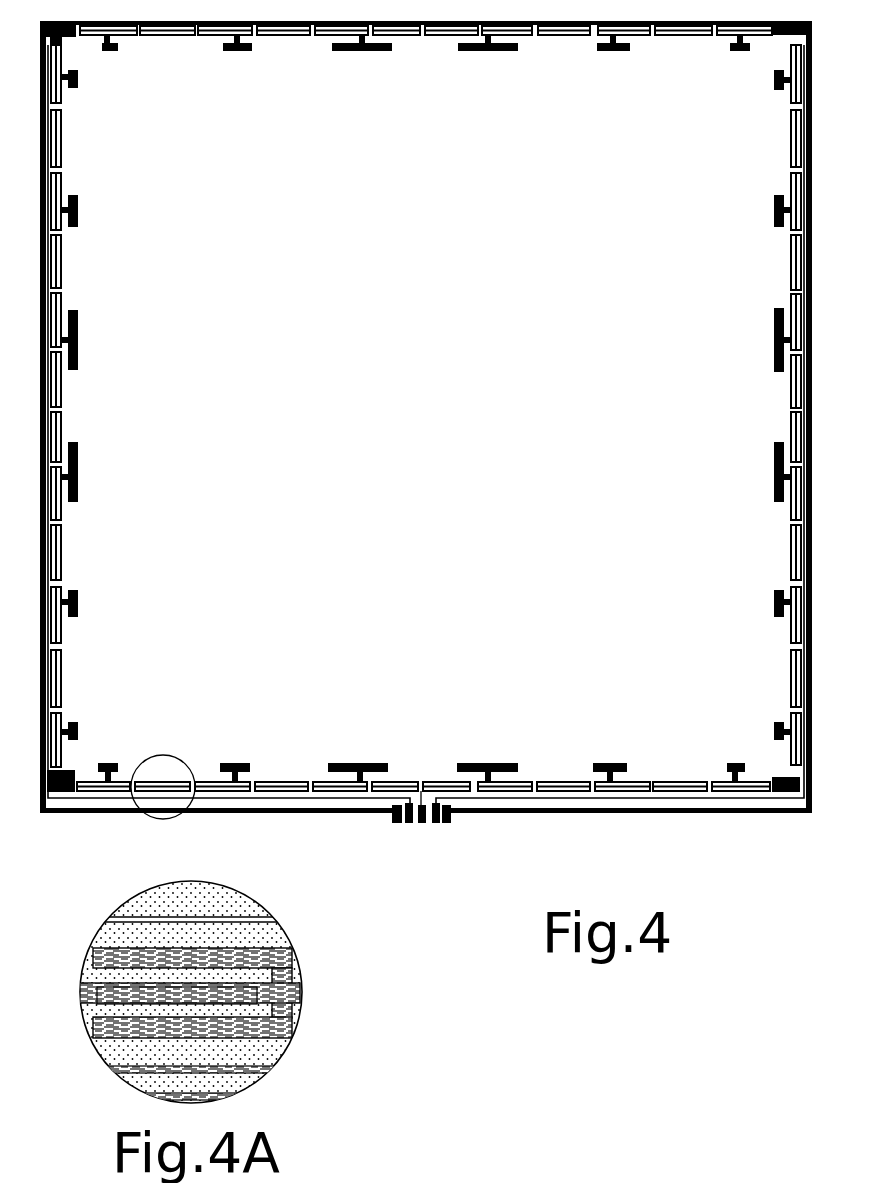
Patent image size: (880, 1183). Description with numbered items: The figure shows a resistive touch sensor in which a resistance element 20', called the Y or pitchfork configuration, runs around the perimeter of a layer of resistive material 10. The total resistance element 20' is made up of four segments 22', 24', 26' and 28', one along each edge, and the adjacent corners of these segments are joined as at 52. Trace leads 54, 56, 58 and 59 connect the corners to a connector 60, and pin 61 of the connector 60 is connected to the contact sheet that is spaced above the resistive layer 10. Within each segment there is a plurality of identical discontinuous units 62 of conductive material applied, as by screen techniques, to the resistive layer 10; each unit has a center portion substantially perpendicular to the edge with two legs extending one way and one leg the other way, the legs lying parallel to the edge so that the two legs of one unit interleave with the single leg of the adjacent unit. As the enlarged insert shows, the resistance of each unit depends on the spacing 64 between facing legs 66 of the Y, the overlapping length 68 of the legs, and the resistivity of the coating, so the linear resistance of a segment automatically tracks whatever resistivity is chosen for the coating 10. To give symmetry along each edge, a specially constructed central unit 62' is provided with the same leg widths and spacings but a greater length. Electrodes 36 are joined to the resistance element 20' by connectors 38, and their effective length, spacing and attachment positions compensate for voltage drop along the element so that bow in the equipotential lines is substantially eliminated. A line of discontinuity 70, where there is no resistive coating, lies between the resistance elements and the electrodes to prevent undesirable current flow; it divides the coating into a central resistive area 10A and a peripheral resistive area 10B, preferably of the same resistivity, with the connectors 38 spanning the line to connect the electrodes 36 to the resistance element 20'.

In FIG. 4, the resistive layer 10 is at (421, 427).
In FIG. 4A, the central resistive area 10A is at (163, 898).
In FIG. 4A, the peripheral resistive area 10B is at (273, 940).
In FIG. 4, the resistance element 20' is at (568, 838).
In FIG. 4, the resistance element segment 22' is at (426, 70).
In FIG. 4, the resistance element segment 24' is at (94, 406).
In FIG. 4, the resistance element segment 26' is at (423, 744).
In FIG. 4, the resistance element segment 28' is at (742, 405).
In FIG. 4, the electrodes 36 is at (500, 52).
In FIG. 4, the connector 38 is at (487, 38).
In FIG. 4, the joined corner 52 is at (780, 797).
In FIG. 4, the trace lead 54 is at (477, 816).
In FIG. 4, the trace lead 56 is at (525, 799).
In FIG. 4, the trace lead 58 is at (330, 812).
In FIG. 4, the trace lead 59 is at (277, 799).
In FIG. 4, the connector 60 is at (392, 824).
In FIG. 4, the pin 61 is at (422, 824).
In FIG. 4, the discontinuous unit 62 is at (174, 758).
In FIG. 4A, the discontinuous unit 62 is at (202, 1035).
In FIG. 4, the central unit 62' is at (412, 751).
In FIG. 4A, the spacing 64 is at (137, 973).
In FIG. 4A, the leg 66 is at (90, 1025).
In FIG. 4A, the overlapping length 68 is at (173, 1010).
In FIG. 4A, the line of discontinuity 70 is at (125, 920).